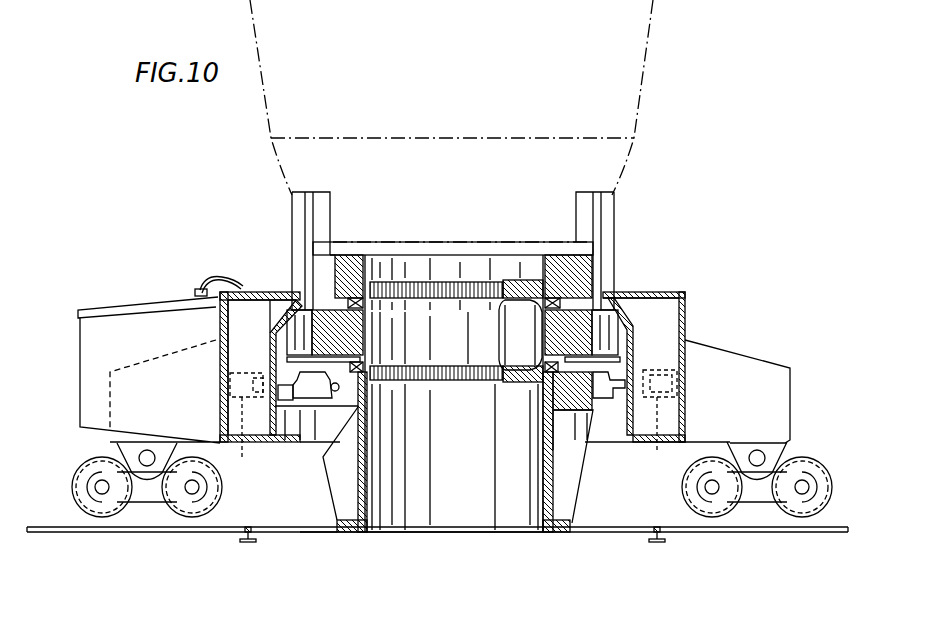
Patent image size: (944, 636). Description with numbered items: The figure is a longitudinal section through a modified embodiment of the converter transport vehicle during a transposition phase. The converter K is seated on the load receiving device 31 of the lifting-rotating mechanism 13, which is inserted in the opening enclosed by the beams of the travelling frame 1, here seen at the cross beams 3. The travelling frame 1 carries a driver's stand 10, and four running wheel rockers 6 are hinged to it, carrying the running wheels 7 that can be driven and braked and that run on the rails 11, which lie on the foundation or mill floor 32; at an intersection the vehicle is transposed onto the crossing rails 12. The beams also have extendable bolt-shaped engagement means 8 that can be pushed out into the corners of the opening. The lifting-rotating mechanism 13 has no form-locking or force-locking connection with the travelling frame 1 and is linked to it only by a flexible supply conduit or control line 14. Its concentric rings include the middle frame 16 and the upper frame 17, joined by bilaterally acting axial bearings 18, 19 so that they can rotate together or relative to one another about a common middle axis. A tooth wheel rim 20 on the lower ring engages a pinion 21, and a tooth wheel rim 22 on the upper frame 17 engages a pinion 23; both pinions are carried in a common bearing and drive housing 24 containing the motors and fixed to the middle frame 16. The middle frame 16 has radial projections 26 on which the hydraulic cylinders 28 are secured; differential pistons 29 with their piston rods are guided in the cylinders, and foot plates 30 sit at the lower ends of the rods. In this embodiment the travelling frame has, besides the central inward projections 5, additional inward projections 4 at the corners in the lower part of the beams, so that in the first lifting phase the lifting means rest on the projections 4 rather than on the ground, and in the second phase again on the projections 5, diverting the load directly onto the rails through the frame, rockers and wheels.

The converter K is at (466, 90).
The travelling frame 1 is at (754, 346).
The cross beams 3 is at (255, 292).
The inward projections 4 is at (285, 440).
The inward projections 5 is at (286, 302).
The running wheel rockers 6 is at (140, 490).
The running wheels 7 is at (102, 500).
The bolt-shaped engagement means 8 is at (453, 426).
The driver's stand 10 is at (135, 337).
The rails 11 is at (58, 532).
The rails 12 is at (246, 542).
The lifting-rotating mechanism 13 is at (452, 345).
The flexible supply conduit or control line 14 is at (200, 286).
The second or middle frame 16 is at (330, 345).
The third or upper frame 17 is at (352, 268).
The axial bearing 18 is at (557, 413).
The axial bearing 19 is at (360, 262).
The tooth wheel rim 20 is at (455, 380).
The pinion 21 is at (497, 378).
The tooth wheel rim 22 is at (462, 290).
The pinion 23 is at (518, 288).
The bearing and drive housing 24 is at (520, 333).
The projections 26 is at (292, 332).
The hydraulic cylinders 28 is at (308, 206).
The differential pistons 29 is at (605, 368).
The foot plates 30 is at (322, 392).
The load receiving device 31 is at (340, 252).
The foundation 32 is at (302, 533).